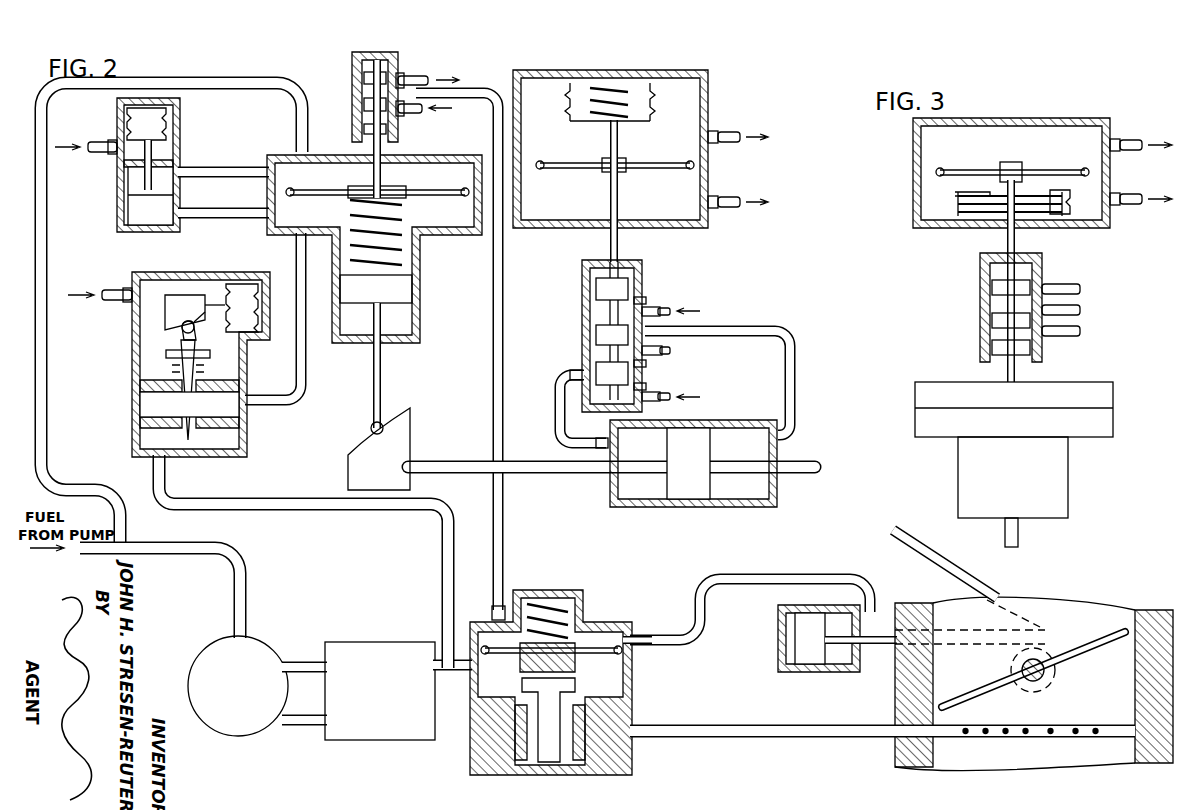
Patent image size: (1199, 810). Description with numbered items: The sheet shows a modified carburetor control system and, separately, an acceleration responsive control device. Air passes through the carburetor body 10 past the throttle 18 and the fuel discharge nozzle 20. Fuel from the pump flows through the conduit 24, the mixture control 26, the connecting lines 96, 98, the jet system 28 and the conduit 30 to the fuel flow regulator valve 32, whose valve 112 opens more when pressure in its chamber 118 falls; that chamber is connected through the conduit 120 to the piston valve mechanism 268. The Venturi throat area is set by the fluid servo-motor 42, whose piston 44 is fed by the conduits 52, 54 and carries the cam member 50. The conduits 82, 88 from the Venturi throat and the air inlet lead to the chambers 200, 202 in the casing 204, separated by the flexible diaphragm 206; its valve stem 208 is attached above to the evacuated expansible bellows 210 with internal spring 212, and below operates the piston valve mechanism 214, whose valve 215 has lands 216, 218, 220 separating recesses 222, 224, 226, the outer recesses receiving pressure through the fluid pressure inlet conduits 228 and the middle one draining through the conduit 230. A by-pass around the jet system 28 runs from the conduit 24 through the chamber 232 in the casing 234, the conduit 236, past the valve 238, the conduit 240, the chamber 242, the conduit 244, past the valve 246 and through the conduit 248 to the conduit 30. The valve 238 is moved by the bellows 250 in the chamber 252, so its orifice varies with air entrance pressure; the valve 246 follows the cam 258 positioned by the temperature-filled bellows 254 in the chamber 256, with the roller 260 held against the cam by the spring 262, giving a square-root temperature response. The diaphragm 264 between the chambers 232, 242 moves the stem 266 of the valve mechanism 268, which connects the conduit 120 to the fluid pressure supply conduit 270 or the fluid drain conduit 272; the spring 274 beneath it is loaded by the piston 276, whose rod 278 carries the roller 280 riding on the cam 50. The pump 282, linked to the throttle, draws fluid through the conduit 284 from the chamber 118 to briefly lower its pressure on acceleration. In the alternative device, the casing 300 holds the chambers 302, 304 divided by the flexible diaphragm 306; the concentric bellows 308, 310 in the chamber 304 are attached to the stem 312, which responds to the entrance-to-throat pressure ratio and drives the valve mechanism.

In FIG. 2, the carburetor body 10 is at (1150, 610).
In FIG. 2, the throttle 18 is at (1110, 642).
In FIG. 2, the fuel discharge nozzle 20 is at (1108, 724).
In FIG. 2, the fuel inlet conduit 24 is at (162, 556).
In FIG. 2, the mixture control 26 is at (238, 737).
In FIG. 2, the jet system 28 is at (348, 741).
In FIG. 2, the conduit 30 is at (447, 671).
In FIG. 2, the fuel flow regulator valve 32 is at (498, 776).
In FIG. 2, the fluid servo-motor 42 is at (776, 516).
In FIG. 2, the piston 44 is at (690, 452).
In FIG. 2, the cam member 50 is at (390, 470).
In FIG. 2, the conduit 52 is at (560, 380).
In FIG. 2, the conduit 54 is at (786, 334).
In FIG. 2, the conduit 82 is at (725, 214).
In FIG. 3, the conduit 82 is at (1130, 152).
In FIG. 2, the conduit 88 is at (104, 141).
In FIG. 3, the conduit 88 is at (1130, 199).
In FIG. 2, the fuel line 96 is at (303, 660).
In FIG. 2, the fuel return line 98 is at (315, 705).
In FIG. 2, the valve 112 is at (566, 766).
In FIG. 2, the expansible chamber 118 is at (585, 636).
In FIG. 2, the conduit 120 is at (493, 342).
In FIG. 2, the chamber 200 is at (672, 203).
In FIG. 2, the chamber 202 is at (662, 148).
In FIG. 2, the casing 204 is at (680, 229).
In FIG. 2, the flexible diaphragm 206 is at (533, 164).
In FIG. 2, the valve stem 208 is at (608, 194).
In FIG. 2, the expansible bellows 210 is at (642, 106).
In FIG. 2, the internal spring 212 is at (612, 88).
In FIG. 2, the piston valve mechanism 214 is at (574, 300).
In FIG. 2, the valve 215 is at (600, 311).
In FIG. 2, the land 216 is at (614, 289).
In FIG. 2, the land 218 is at (614, 334).
In FIG. 2, the land 220 is at (614, 373).
In FIG. 2, the recess 222 is at (646, 300).
In FIG. 2, the recess 224 is at (640, 362).
In FIG. 2, the recess 226 is at (646, 386).
In FIG. 2, the fluid pressure inlet conduit 228 is at (672, 318).
In FIG. 2, the conduit 230 is at (62, 450).
In FIG. 2, the chamber 232 is at (322, 188).
In FIG. 2, the casing 234 is at (446, 236).
In FIG. 3, the casing 234 is at (1100, 438).
In FIG. 2, the conduit 236 is at (232, 164).
In FIG. 2, the valve 238 is at (128, 183).
In FIG. 2, the conduit 240 is at (214, 219).
In FIG. 2, the chamber 242 is at (322, 217).
In FIG. 2, the conduit 244 is at (306, 370).
In FIG. 2, the valve 246 is at (178, 402).
In FIG. 2, the conduit 248 is at (245, 500).
In FIG. 2, the bellows 250 is at (166, 128).
In FIG. 2, the chamber 252 is at (180, 152).
In FIG. 2, the bellows 254 is at (240, 290).
In FIG. 2, the chamber 256 is at (156, 294).
In FIG. 2, the cam 258 is at (186, 300).
In FIG. 2, the roller 260 is at (175, 330).
In FIG. 2, the spring 262 is at (172, 372).
In FIG. 2, the diaphragm 264 is at (458, 190).
In FIG. 2, the stem 266 is at (388, 150).
In FIG. 2, the piston valve mechanism 268 is at (344, 83).
In FIG. 3, the piston valve mechanism 268 is at (968, 321).
In FIG. 2, the fluid pressure supply conduit 270 is at (412, 110).
In FIG. 2, the fluid drain conduit 272 is at (406, 80).
In FIG. 2, the spring 274 is at (384, 207).
In FIG. 2, the piston 276 is at (388, 298).
In FIG. 2, the rod 278 is at (381, 372).
In FIG. 2, the roller 280 is at (371, 428).
In FIG. 2, the pump 282 is at (792, 673).
In FIG. 2, the conduit 284 is at (684, 646).
In FIG. 3, the casing 300 is at (921, 229).
In FIG. 3, the expansible chamber 302 is at (1060, 153).
In FIG. 3, the expansible chamber 304 is at (1045, 196).
In FIG. 3, the flexible diaphragm 306 is at (933, 170).
In FIG. 3, the bellows 308 is at (960, 218).
In FIG. 3, the bellows 310 is at (952, 208).
In FIG. 3, the stem 312 is at (1014, 242).